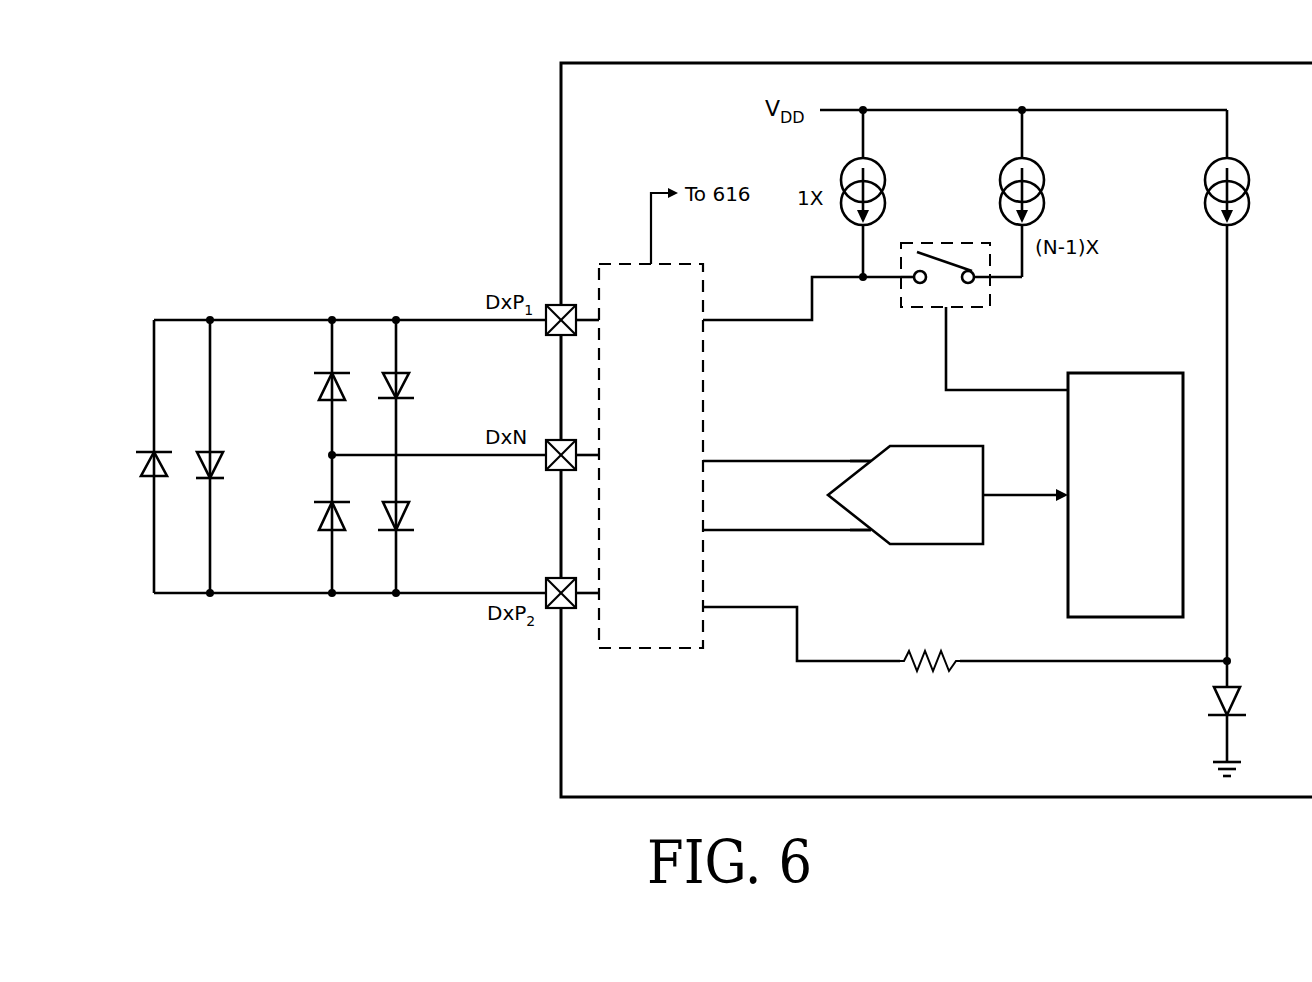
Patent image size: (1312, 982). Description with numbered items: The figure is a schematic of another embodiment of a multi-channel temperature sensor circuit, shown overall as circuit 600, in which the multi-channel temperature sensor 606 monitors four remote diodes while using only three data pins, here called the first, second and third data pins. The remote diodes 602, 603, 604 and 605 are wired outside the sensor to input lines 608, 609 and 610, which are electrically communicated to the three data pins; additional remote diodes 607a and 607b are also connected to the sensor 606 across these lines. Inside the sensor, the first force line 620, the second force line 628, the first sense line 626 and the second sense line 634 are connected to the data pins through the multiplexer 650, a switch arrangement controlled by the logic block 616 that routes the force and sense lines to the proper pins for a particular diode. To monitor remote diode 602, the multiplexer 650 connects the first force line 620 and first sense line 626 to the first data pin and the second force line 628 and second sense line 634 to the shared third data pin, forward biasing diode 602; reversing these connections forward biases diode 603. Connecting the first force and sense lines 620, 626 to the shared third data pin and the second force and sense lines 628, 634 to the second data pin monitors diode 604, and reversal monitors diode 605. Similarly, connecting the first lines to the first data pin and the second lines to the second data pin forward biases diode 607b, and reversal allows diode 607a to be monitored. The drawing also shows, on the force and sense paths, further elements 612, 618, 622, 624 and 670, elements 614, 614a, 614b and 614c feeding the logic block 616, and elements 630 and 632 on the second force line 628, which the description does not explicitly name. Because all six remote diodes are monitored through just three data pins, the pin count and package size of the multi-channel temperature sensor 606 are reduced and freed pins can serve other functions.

The system 600 is at (428, 128).
The remote diode 602 is at (404, 372).
The remote diode 603 is at (326, 403).
The remote diode 604 is at (404, 504).
The remote diode 605 is at (326, 531).
The multi-channel temperature sensor 606 is at (977, 63).
The remote diode 607a is at (147, 480).
The remote diode 607b is at (217, 483).
The input line 608 is at (350, 305).
The input line 609 is at (439, 440).
The input line 610 is at (350, 581).
The current source circuit 612 is at (851, 167).
The analog-to-digital converter 614 is at (948, 499).
The A/D first input 614a is at (870, 458).
The A/D second input 614b is at (870, 535).
The A/D output 614c is at (990, 490).
The logic block 616 is at (1098, 373).
The 1X current source 618 is at (879, 162).
The first force line 620 is at (762, 322).
The switch 622 is at (915, 243).
The (N-1)X current source 624 is at (1040, 160).
The first sense line 626 is at (732, 461).
The second force line 628 is at (810, 661).
The resistor 630 is at (926, 655).
The diode 632 is at (1240, 687).
The second sense line 634 is at (732, 530).
The multiplexer 650 is at (636, 262).
The current source 670 is at (1211, 160).